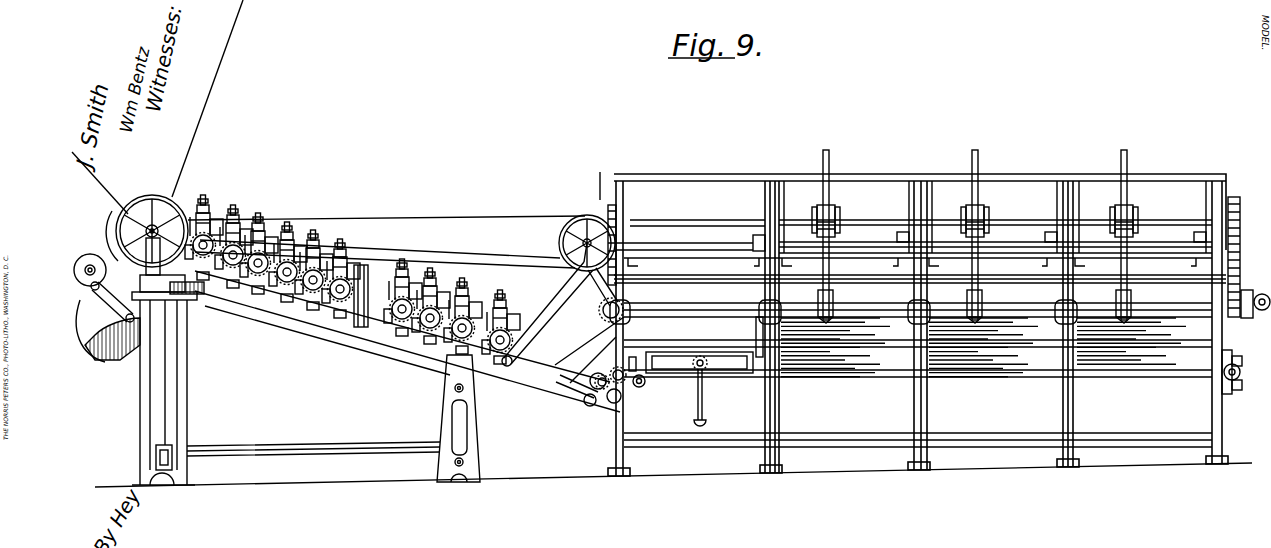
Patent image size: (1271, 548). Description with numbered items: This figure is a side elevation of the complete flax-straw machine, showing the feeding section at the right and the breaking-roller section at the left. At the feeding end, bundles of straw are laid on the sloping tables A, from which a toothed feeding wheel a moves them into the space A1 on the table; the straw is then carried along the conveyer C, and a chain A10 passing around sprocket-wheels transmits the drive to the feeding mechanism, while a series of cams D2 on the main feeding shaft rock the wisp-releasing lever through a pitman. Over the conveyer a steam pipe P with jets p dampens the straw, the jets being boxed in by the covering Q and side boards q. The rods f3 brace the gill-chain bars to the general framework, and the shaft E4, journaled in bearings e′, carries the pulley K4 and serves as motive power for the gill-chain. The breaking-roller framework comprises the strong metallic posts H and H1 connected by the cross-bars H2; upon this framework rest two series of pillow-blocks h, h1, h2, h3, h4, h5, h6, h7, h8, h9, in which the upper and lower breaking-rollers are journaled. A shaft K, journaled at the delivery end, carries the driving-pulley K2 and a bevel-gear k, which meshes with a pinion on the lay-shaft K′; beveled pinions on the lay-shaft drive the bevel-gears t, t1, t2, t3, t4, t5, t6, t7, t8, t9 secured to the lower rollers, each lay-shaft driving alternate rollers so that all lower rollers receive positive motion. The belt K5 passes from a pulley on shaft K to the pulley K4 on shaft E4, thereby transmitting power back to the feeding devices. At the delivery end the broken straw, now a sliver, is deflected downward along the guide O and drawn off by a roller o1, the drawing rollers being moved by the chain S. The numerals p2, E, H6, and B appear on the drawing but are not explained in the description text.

The bevel-gear k is at (132, 200).
The driving-pulley K2 is at (152, 190).
The shaft K is at (182, 212).
The pillow-block h is at (501, 293).
The pillow-block h1 is at (463, 281).
The pillow-block h2 is at (431, 271).
The pillow-block h3 is at (403, 262).
The pillow-block h4 is at (341, 242).
The pillow-block h5 is at (314, 233).
The pillow-block h6 is at (288, 225).
The pillow-block h7 is at (259, 216).
The pillow-block h8 is at (234, 208).
The pillow-block h9 is at (214, 198).
The belt K5 is at (420, 258).
The lay-shaft K′ is at (556, 272).
The bearing e′ is at (570, 284).
The rod f3 is at (548, 325).
The shaft E4 is at (612, 185).
The pulley K4 is at (572, 218).
The bevel-gear t is at (500, 386).
The bevel-gear t1 is at (462, 376).
The bevel-gear t2 is at (430, 366).
The bevel-gear t3 is at (402, 358).
The bevel-gear t4 is at (350, 346).
The bevel-gear t5 is at (313, 332).
The bevel-gear t6 is at (287, 324).
The bevel-gear t7 is at (258, 316).
The bevel-gear t8 is at (233, 308).
The bevel-gear t9 is at (203, 300).
The post H is at (176, 388).
The post H1 is at (446, 402).
The cross-bar H2 is at (348, 430).
The chain S is at (98, 270).
The guide O is at (78, 278).
The roller o1 is at (108, 366).
The bracket p2 is at (118, 380).
The conveyer C is at (1036, 384).
The space A1 is at (648, 222).
The shaft E is at (700, 240).
The longitudinal bar H6 is at (630, 272).
The sloping table A is at (860, 240).
The vertical rod B is at (830, 156).
The wheel a is at (810, 205).
The cam D2 is at (820, 330).
The covering Q is at (706, 356).
The steam pipe P is at (697, 356).
The jet p is at (695, 372).
The side board q is at (672, 366).
The chain A10 is at (1232, 194).